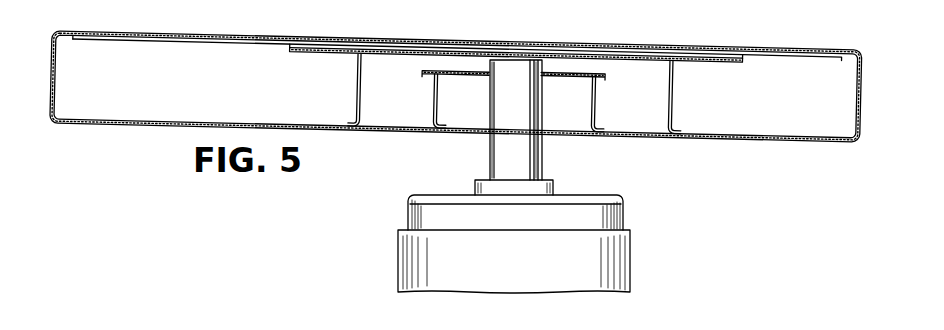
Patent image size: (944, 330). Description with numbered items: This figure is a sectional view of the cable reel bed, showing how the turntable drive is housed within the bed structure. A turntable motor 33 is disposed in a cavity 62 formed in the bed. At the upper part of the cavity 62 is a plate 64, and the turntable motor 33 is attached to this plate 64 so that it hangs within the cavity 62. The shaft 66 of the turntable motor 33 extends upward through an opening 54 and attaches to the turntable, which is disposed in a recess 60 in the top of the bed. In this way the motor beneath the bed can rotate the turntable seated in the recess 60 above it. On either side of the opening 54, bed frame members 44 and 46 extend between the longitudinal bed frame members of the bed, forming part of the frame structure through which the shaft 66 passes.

The turntable motor 33 is at (517, 266).
The bed frame member 44 is at (357, 118).
The bed frame member 46 is at (673, 120).
The opening 54 is at (542, 66).
The recess 60 is at (710, 53).
The cavity 62 is at (452, 107).
The plate 64 is at (566, 73).
The shaft 66 is at (536, 124).